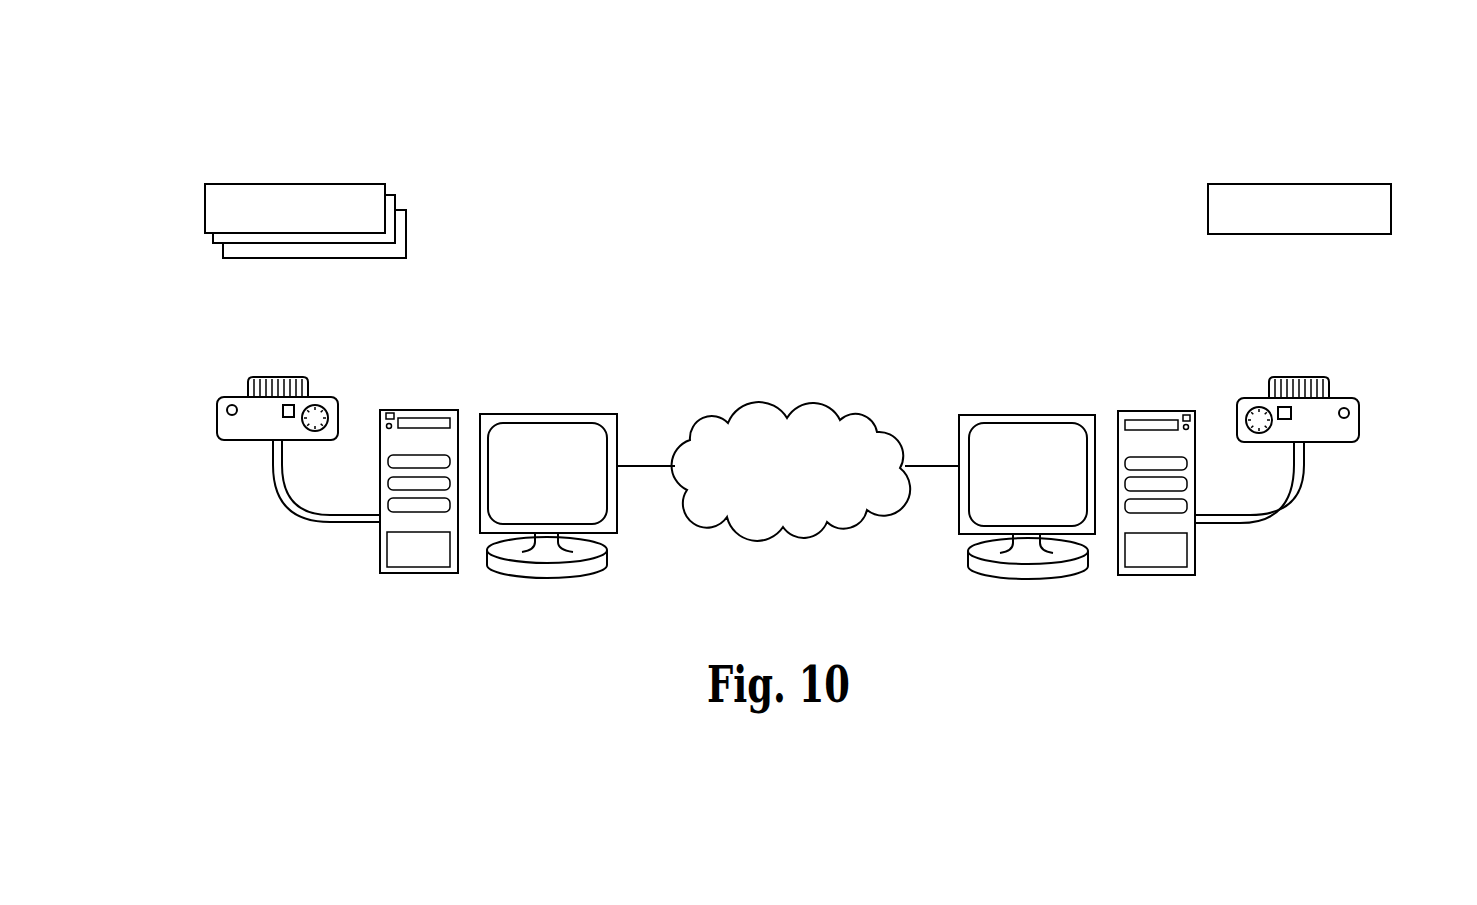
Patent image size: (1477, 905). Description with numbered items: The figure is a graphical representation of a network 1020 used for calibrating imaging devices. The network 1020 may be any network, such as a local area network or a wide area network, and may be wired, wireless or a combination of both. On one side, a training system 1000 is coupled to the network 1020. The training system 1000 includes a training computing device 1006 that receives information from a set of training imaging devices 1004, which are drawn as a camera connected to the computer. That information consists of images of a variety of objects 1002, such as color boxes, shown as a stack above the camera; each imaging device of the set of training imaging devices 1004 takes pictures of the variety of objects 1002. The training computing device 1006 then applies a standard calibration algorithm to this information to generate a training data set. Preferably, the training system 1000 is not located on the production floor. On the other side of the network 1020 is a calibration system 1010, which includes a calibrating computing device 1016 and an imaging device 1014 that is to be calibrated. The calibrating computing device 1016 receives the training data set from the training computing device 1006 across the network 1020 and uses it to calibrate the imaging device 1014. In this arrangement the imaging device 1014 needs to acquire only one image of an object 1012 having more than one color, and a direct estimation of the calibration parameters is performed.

The training system 1000 is at (531, 116).
The variety of objects 1002 is at (205, 203).
The set of training imaging devices 1004 is at (217, 422).
The training computing device 1006 is at (522, 414).
The calibration system 1010 is at (1004, 116).
The object 1012 is at (1208, 204).
The imaging device 1014 is at (1359, 424).
The calibrating computing device 1016 is at (1053, 415).
The network 1020 is at (810, 407).